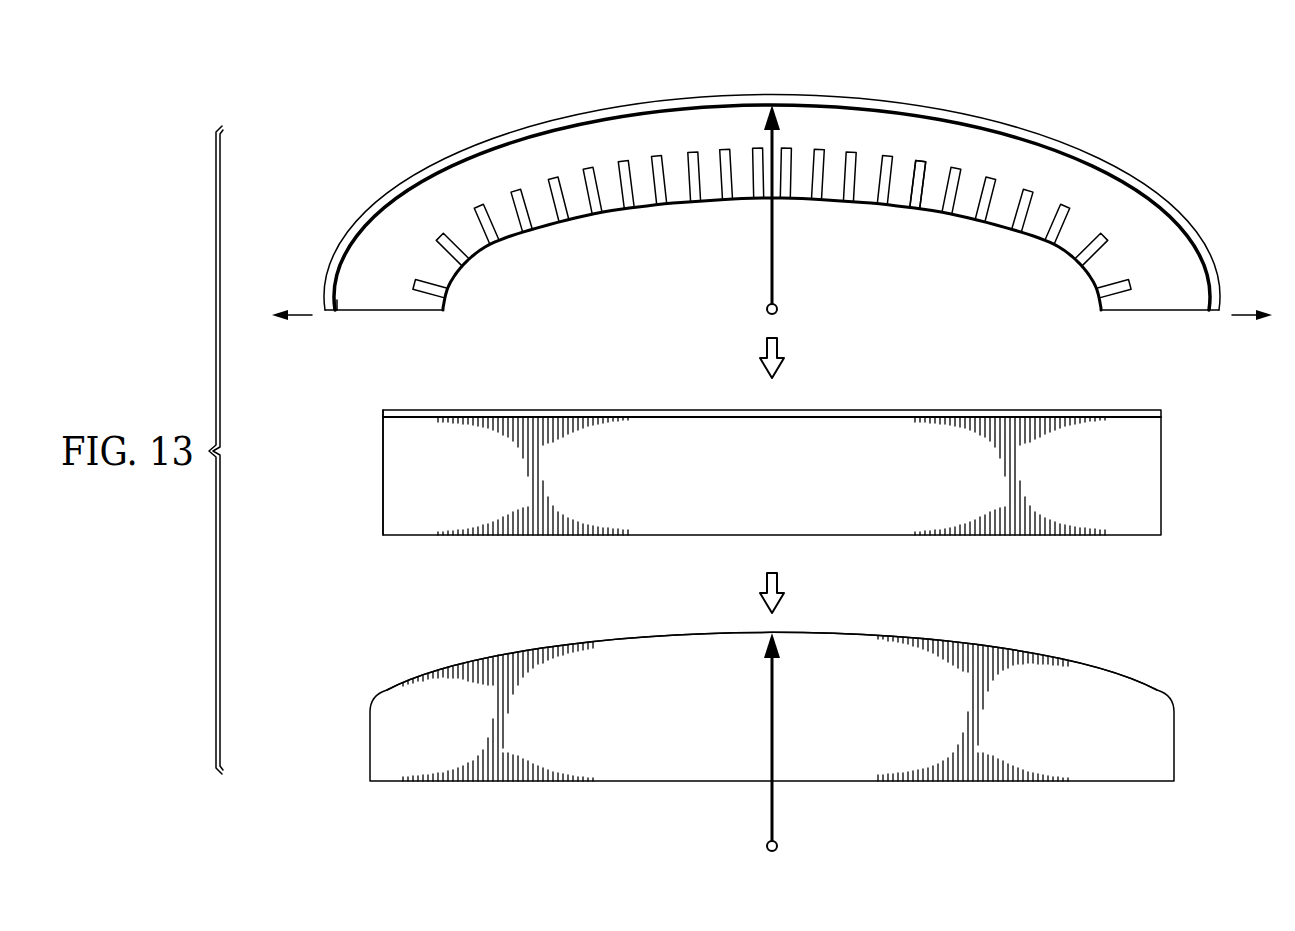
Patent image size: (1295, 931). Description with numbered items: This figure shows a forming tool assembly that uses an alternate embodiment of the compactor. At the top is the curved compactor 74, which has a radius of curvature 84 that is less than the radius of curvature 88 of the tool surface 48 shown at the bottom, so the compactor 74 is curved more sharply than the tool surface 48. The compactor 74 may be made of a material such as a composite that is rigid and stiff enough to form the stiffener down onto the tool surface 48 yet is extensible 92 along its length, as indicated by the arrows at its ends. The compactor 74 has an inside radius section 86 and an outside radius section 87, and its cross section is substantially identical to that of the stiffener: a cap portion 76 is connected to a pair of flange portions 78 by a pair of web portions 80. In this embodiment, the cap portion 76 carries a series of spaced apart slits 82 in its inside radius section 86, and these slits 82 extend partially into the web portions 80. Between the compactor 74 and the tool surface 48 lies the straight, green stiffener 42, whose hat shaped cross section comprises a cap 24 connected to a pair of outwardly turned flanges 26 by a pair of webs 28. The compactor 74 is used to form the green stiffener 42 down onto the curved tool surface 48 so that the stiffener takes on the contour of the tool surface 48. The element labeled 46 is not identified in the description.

The curved compactor 74 is at (1176, 104).
The cap portion 76 is at (490, 268).
The flange portions 78 is at (521, 131).
The web portions 80 is at (577, 134).
The slits 82 is at (603, 214).
The radius of curvature 84 is at (774, 296).
The inside radius section 86 is at (909, 223).
The outside radius section 87 is at (1052, 136).
The extensible 92 is at (312, 315).
The cap 24 is at (428, 537).
The flanges 26 is at (1148, 420).
The webs 28 is at (390, 496).
The green stiffener 42 is at (790, 500).
The formed body 46 is at (362, 749).
The tool surface 48 is at (1117, 670).
The radius of curvature 88 is at (774, 832).